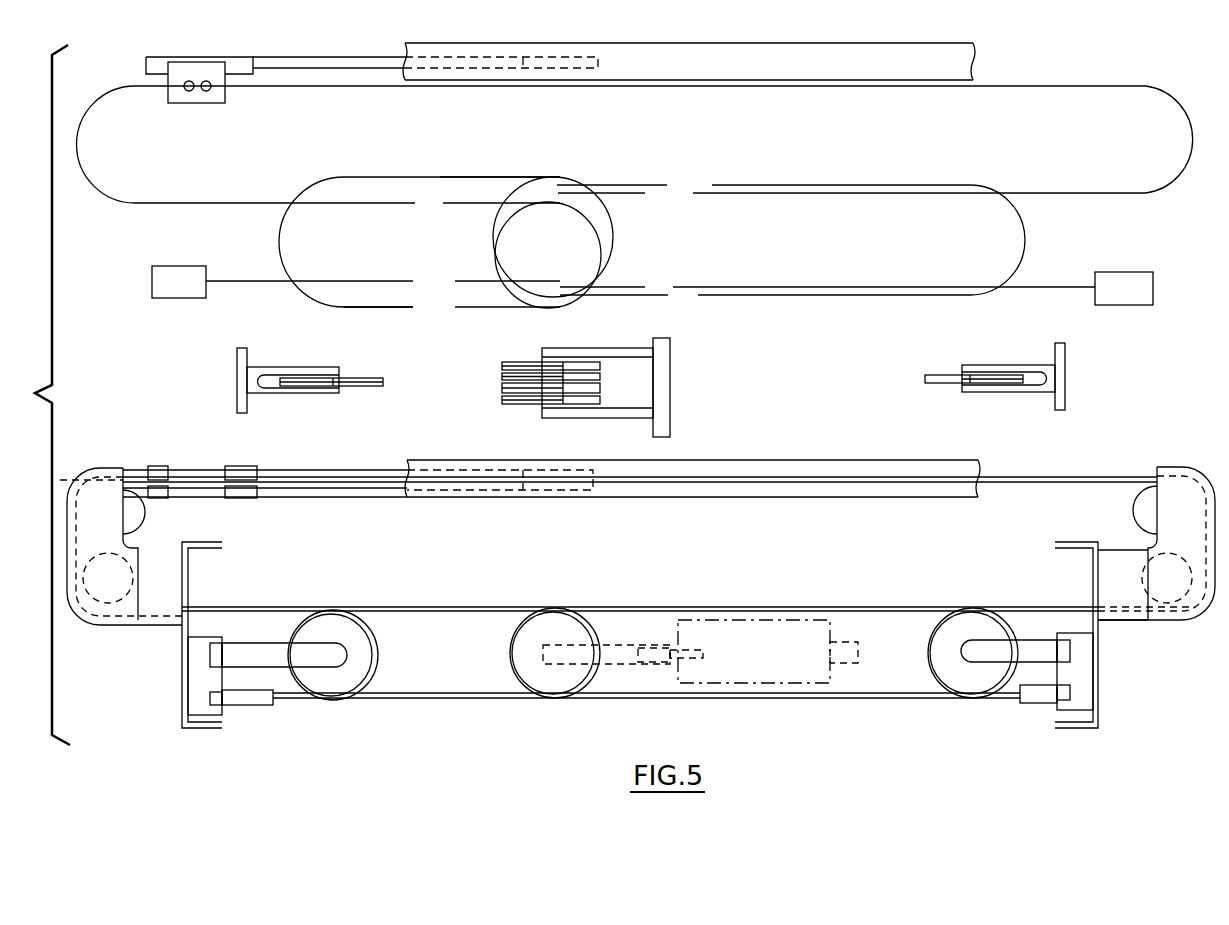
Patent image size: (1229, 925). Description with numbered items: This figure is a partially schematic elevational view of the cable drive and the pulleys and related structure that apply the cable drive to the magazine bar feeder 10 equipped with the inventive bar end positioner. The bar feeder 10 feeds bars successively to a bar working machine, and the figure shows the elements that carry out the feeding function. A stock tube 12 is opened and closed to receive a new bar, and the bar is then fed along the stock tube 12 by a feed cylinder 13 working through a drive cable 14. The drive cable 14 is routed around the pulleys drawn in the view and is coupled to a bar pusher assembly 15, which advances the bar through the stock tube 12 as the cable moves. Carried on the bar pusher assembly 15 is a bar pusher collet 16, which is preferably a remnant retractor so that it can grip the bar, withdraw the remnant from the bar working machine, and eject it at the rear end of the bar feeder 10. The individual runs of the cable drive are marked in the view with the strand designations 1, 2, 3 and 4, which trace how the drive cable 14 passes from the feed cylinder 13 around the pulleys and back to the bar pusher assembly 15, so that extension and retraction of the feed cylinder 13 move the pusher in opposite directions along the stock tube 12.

The magazine bar feeder 10 is at (1173, 62).
The first strand 1 is at (498, 400).
The second strand 2 is at (344, 177).
The third strand 3 is at (693, 195).
The fourth strand 4 is at (712, 185).
The stock tube 12 is at (403, 76).
The feed cylinder 13 is at (742, 623).
The drive cable 14 is at (677, 86).
The bar pusher assembly 15 is at (205, 105).
The bar pusher collet 16 is at (560, 72).